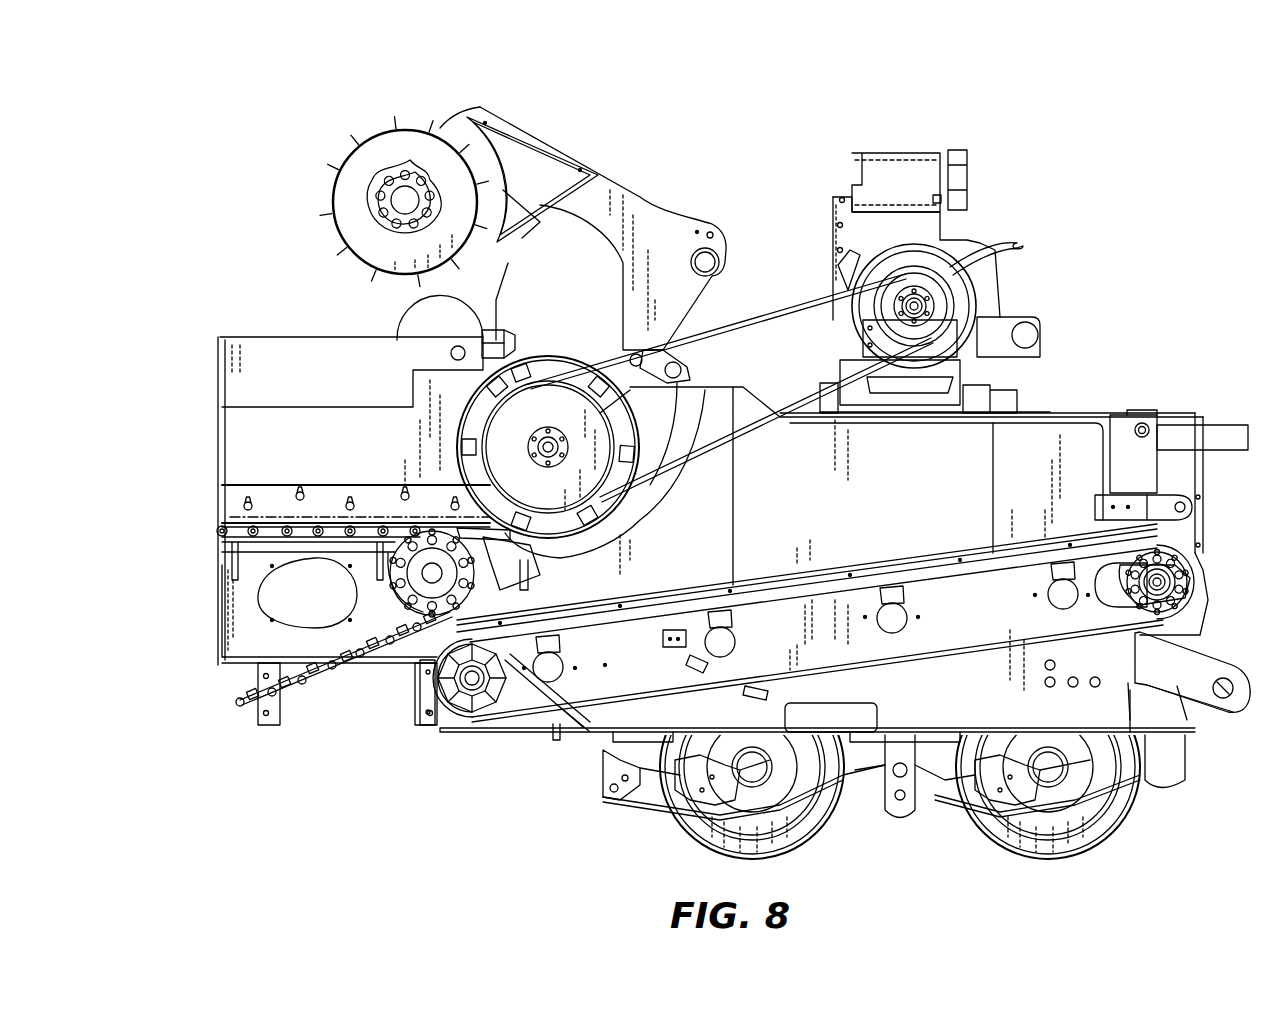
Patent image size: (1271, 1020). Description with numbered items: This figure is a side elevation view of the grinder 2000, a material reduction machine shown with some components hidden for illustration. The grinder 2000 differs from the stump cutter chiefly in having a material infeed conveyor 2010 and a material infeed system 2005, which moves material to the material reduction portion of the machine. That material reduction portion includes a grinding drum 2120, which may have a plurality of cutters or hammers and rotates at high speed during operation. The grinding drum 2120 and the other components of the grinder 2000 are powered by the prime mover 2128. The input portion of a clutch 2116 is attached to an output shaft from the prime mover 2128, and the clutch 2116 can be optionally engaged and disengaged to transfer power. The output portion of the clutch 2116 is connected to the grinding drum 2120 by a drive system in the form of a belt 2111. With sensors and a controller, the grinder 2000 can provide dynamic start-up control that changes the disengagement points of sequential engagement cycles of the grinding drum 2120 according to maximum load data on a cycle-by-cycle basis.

The grinder 2000 is at (557, 82).
The material infeed system 2005 is at (327, 200).
The material infeed conveyor 2010 is at (295, 520).
The grinding drum 2120 is at (512, 338).
The belt 2111 is at (765, 308).
The prime mover 2128 is at (903, 172).
The clutch 2116 is at (945, 265).